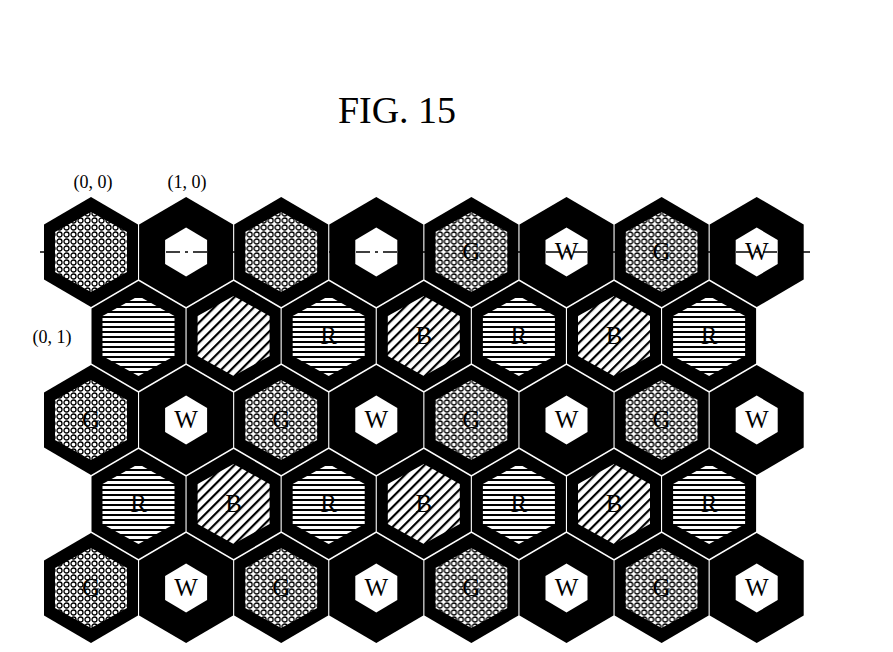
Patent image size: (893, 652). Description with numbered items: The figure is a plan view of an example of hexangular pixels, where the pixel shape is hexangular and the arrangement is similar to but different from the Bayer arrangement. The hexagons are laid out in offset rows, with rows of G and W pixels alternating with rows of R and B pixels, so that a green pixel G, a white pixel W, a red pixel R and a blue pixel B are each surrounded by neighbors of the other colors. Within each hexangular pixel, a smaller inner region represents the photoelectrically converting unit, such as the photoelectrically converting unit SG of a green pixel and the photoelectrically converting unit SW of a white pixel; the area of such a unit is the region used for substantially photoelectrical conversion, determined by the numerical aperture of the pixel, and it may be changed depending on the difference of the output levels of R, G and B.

The photoelectrically converting unit SG is at (68, 234).
The white sub-pixel SW is at (194, 237).
The element G is at (281, 252).
The white sub-pixel W is at (376, 252).
The element R is at (139, 336).
The element B is at (234, 336).